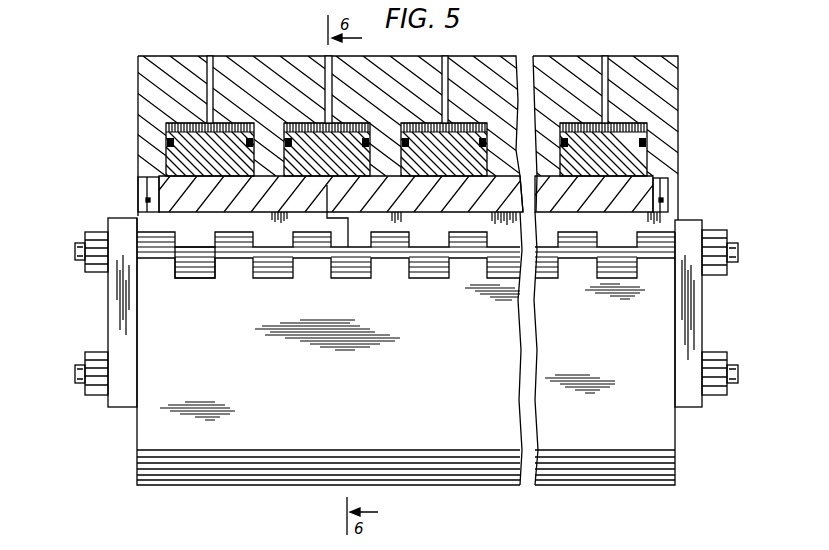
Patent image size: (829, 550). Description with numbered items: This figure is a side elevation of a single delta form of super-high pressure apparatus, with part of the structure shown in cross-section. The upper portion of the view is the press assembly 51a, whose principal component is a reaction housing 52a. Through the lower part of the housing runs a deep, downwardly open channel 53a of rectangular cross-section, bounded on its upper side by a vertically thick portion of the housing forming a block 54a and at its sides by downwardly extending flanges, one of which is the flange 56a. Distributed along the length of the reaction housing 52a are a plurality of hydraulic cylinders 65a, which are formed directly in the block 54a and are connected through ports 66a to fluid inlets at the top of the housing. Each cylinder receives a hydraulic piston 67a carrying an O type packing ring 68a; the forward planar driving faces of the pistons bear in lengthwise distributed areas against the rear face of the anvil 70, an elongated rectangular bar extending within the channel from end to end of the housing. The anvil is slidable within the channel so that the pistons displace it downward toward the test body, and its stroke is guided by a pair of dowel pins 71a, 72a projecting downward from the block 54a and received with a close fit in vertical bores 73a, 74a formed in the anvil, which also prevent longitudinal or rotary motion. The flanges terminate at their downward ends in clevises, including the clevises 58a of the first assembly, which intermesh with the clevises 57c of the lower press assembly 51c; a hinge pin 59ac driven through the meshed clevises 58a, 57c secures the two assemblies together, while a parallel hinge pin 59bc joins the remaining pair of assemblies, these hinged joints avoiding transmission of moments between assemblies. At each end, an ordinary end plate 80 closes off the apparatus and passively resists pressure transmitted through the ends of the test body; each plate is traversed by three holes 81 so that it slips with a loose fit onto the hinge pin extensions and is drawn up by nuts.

The press assembly 51a is at (271, 53).
The press assembly 51c is at (226, 490).
The reaction housing 52a is at (660, 78).
The channel 53a is at (148, 178).
The block 54a is at (144, 100).
The flange 56a is at (137, 221).
The clevises 57c is at (165, 247).
The clevises 58a is at (190, 278).
The hinge pin 59ac is at (75, 262).
The hinge pin 59bc is at (76, 376).
The hydraulic cylinder 65a is at (640, 125).
The port 66a is at (606, 57).
The hydraulic piston 67a is at (650, 165).
The O type packing ring 68a is at (648, 145).
The anvil 70 is at (272, 196).
The dowel pin 71a is at (660, 196).
The dowel pin 72a is at (139, 183).
The vertical bore 73a is at (676, 209).
The vertical bore 74a is at (146, 200).
The end plate 80 is at (118, 400).
The hole 81 is at (100, 272).